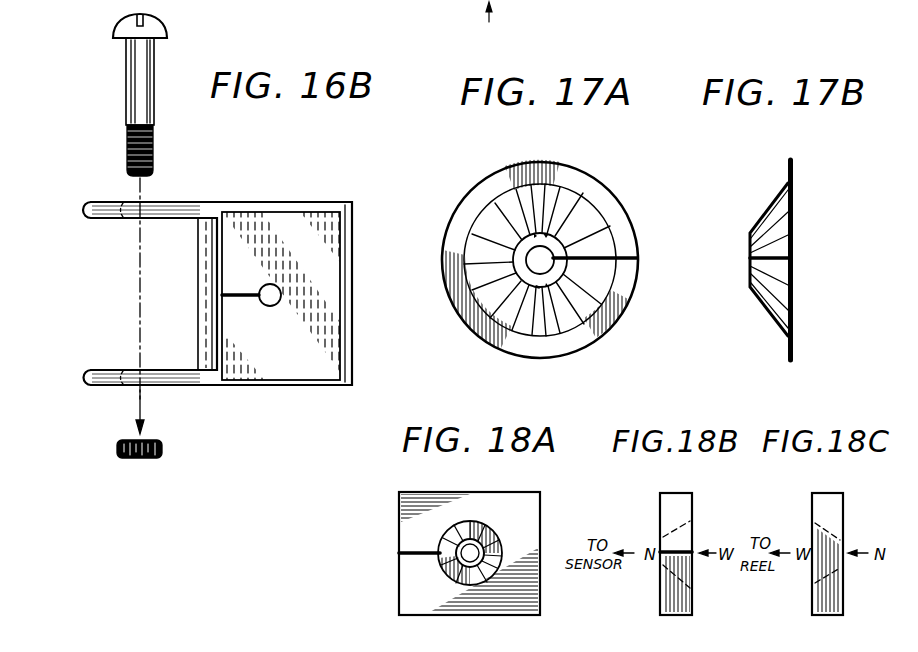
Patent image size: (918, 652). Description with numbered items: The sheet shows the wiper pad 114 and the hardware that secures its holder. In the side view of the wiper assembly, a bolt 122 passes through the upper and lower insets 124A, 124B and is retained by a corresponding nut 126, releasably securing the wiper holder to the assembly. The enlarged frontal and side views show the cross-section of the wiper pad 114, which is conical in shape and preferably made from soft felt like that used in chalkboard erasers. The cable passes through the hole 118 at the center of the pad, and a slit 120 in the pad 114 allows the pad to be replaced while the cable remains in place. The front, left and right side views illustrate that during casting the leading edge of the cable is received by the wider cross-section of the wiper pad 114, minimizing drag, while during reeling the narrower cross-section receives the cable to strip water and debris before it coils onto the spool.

In FIG. 17A, the wiper pad 114 is at (486, 343).
In FIG. 17B, the wiper pad 114 is at (769, 313).
In FIG. 18A, the wiper pad 114 is at (399, 529).
In FIG. 18B, the wiper pad 114 is at (660, 605).
In FIG. 18C, the wiper pad 114 is at (812, 605).
In FIG. 16B, the hole 118 is at (272, 287).
In FIG. 17A, the hole 118 is at (543, 262).
In FIG. 17A, the slit 120 is at (568, 262).
In FIG. 16B, the bolt 122 is at (128, 97).
In FIG. 16B, the inset 124A is at (132, 221).
In FIG. 16B, the inset 124B is at (131, 368).
In FIG. 16B, the nut 126 is at (115, 449).